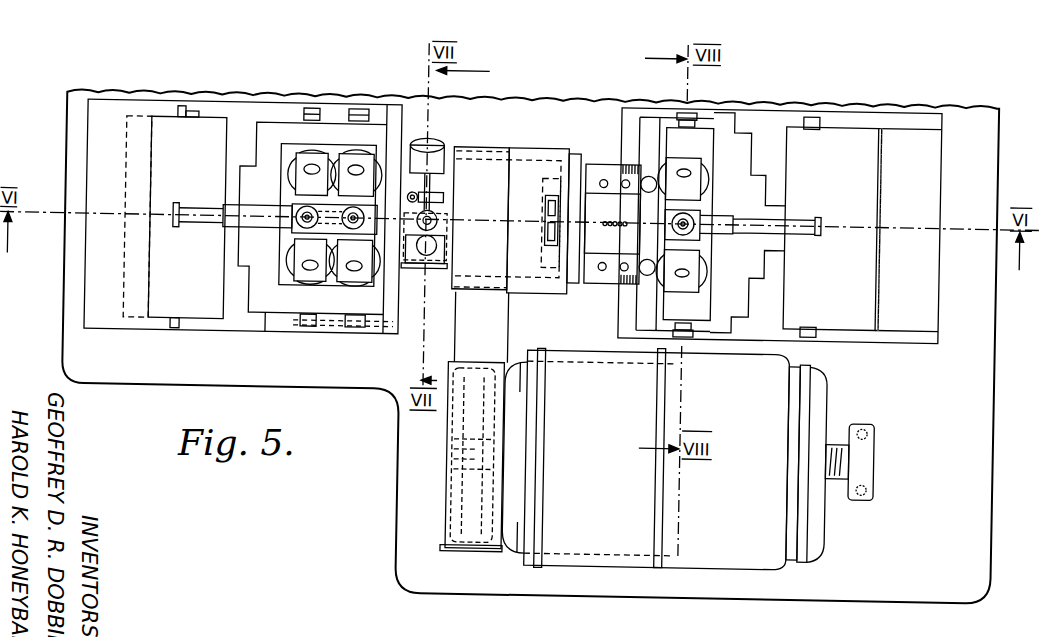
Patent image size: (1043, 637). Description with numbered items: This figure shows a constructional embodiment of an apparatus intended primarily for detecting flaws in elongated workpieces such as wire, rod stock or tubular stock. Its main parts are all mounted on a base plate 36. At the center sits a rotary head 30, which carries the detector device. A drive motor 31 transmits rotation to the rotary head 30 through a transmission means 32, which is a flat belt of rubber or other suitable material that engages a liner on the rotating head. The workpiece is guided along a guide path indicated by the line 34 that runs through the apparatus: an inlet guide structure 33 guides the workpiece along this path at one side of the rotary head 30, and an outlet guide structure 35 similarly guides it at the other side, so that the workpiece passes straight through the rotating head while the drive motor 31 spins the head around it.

The rotary head 30 is at (559, 140).
The drive motor 31 is at (568, 569).
The transmission means 32 is at (446, 338).
The inlet guide structure 33 is at (684, 96).
The guide path 34 is at (158, 221).
The outlet guide structure 35 is at (320, 98).
The base plate 36 is at (345, 382).